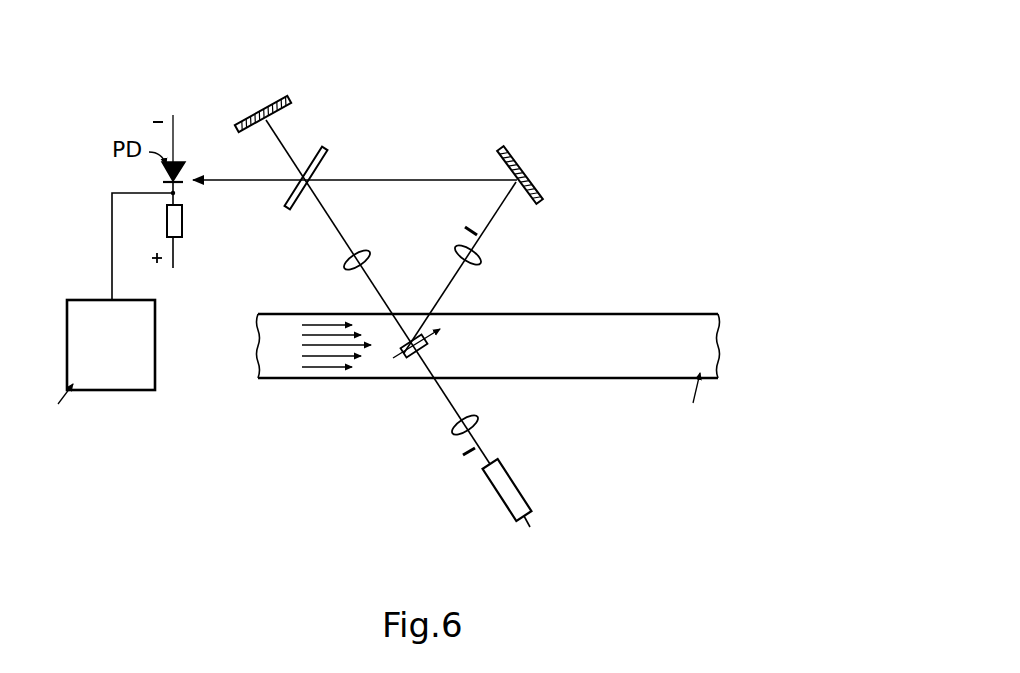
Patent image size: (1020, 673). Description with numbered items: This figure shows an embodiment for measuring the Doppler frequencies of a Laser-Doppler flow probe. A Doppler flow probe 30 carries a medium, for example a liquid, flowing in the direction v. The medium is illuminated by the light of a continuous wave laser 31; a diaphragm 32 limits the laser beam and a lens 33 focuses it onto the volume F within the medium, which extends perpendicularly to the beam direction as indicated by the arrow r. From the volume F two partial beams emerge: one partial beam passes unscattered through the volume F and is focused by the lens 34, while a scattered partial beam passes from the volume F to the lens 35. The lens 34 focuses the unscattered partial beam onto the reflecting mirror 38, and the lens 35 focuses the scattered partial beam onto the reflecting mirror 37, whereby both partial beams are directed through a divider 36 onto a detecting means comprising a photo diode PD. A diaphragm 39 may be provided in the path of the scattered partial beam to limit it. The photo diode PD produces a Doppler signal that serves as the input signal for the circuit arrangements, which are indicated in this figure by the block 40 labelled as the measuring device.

The Doppler flow probe 30 is at (599, 357).
The continuous wave laser 31 is at (522, 492).
The diaphragm 32 is at (488, 437).
The lens 33 is at (455, 423).
The lens 34 is at (345, 263).
The lens 35 is at (458, 260).
The divider 36 is at (328, 153).
The reflecting mirror 37 is at (526, 170).
The reflecting mirror 38 is at (289, 92).
The diaphragm 39 is at (490, 245).
The block 40 is at (156, 391).